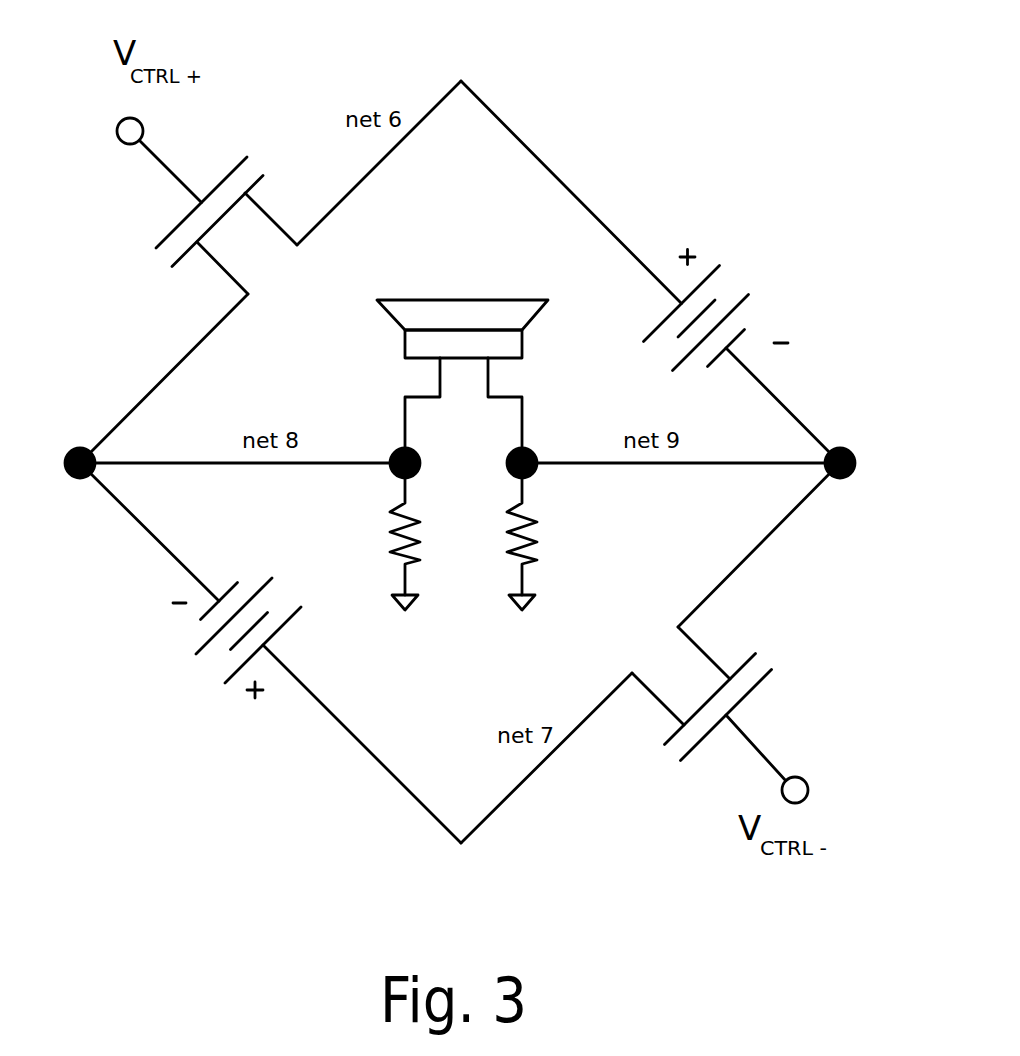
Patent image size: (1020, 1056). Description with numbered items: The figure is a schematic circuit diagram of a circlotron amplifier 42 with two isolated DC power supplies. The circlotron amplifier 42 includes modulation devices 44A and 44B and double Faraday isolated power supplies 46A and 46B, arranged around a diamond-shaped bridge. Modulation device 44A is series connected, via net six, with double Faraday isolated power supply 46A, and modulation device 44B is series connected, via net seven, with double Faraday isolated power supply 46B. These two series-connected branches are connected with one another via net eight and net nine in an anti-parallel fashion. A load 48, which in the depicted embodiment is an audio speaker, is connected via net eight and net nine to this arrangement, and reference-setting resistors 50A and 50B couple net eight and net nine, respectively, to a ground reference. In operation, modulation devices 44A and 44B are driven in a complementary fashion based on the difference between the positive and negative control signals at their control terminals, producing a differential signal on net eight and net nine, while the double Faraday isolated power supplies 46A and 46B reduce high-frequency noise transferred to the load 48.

The circlotron amplifier 42 is at (460, 425).
The modulation device 44A is at (165, 238).
The modulation device 44B is at (758, 682).
The double Faraday isolated power supply 46A is at (740, 305).
The double Faraday isolated power supply 46B is at (198, 648).
The load 48 is at (465, 300).
The reference-setting resistor 50A is at (400, 552).
The reference-setting resistor 50B is at (527, 537).